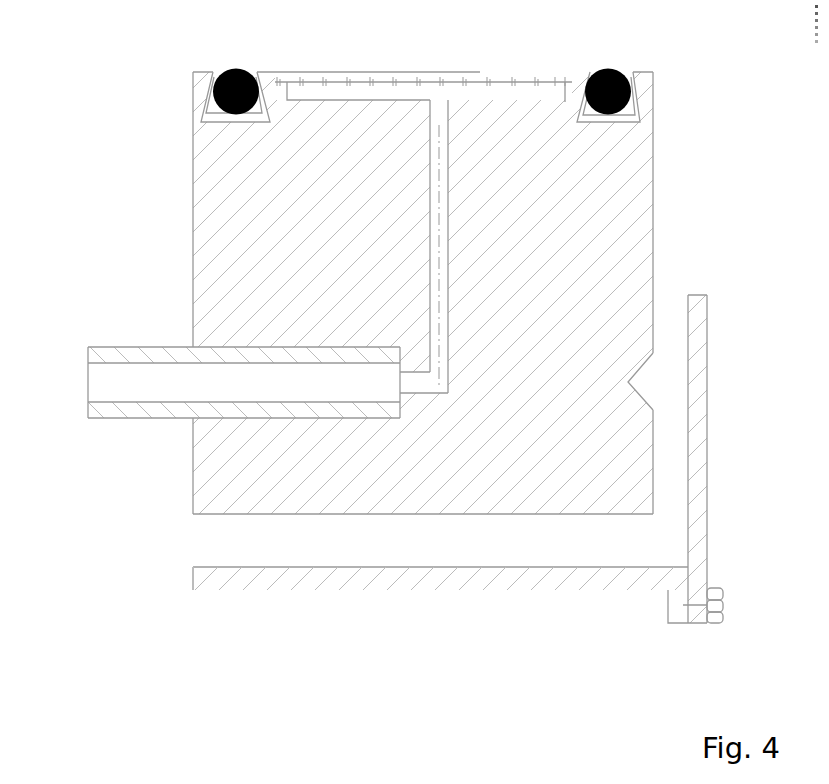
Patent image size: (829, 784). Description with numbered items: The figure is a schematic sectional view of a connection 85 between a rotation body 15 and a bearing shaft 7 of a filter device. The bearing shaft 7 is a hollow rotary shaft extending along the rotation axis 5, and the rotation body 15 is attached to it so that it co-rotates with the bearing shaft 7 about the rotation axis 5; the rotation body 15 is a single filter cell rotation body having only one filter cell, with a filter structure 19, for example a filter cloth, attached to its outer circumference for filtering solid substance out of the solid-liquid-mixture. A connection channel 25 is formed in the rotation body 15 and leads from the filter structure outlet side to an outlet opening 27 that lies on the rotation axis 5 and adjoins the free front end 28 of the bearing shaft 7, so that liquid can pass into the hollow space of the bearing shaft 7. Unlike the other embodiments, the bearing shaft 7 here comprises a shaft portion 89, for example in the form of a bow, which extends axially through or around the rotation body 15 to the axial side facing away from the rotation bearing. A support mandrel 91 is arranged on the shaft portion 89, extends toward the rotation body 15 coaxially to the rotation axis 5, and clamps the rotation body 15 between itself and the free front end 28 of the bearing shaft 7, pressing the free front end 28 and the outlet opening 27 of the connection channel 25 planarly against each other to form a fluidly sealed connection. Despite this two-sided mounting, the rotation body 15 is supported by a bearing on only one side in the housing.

The rotation axis 5 is at (60, 382).
The bearing shaft 7 is at (163, 420).
The rotation body 15 is at (583, 176).
The filter structure 19 is at (477, 93).
The connection channel 25 is at (455, 218).
The outlet opening 27 is at (405, 393).
The free front end of the bearing shaft 28 is at (400, 355).
The connection 85 is at (394, 590).
The shaft portion 89 is at (575, 578).
The support mandrel 91 is at (628, 382).